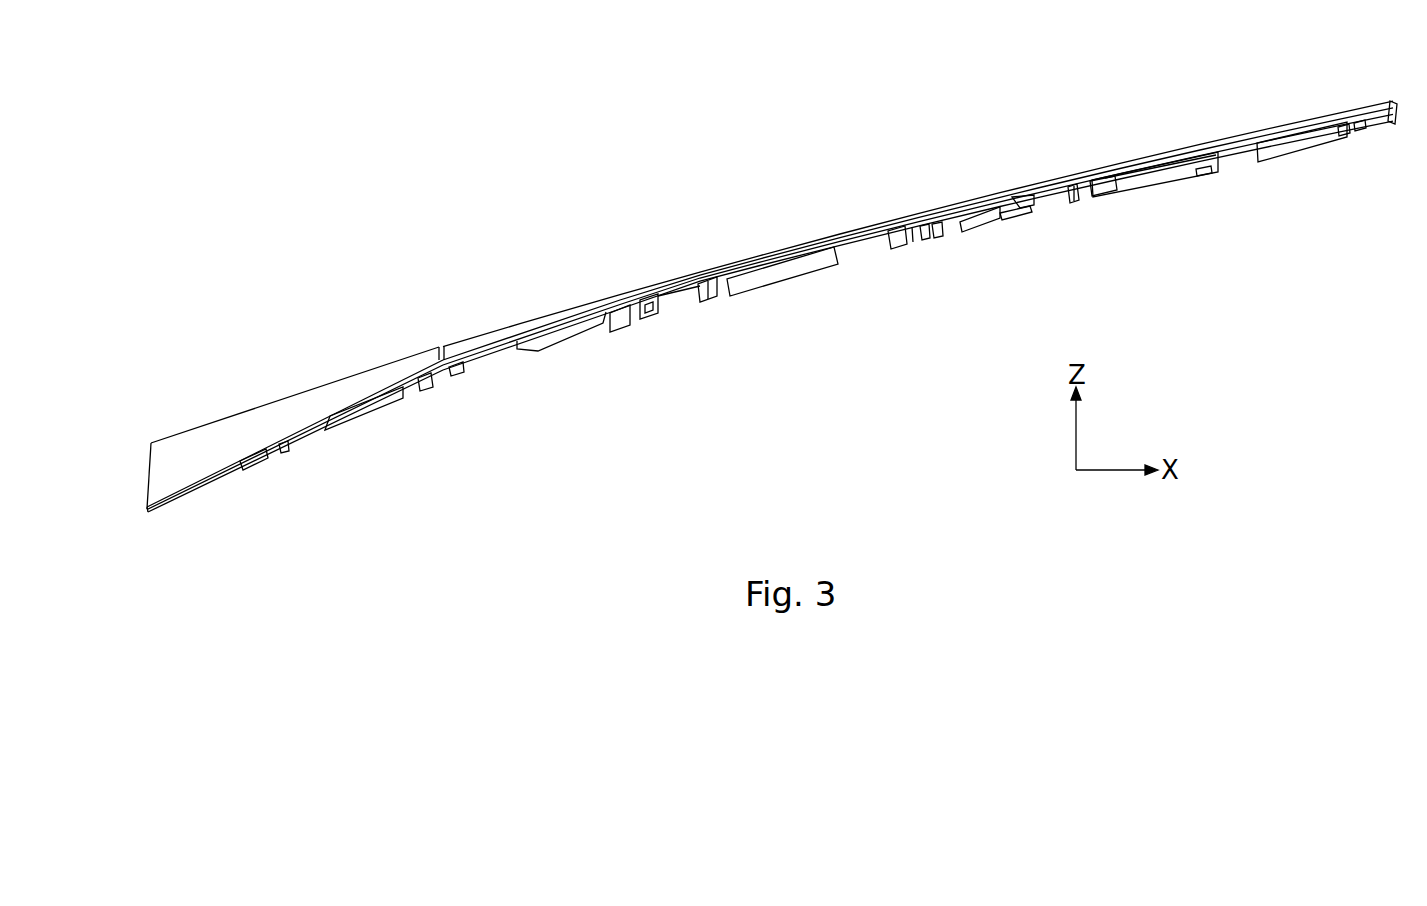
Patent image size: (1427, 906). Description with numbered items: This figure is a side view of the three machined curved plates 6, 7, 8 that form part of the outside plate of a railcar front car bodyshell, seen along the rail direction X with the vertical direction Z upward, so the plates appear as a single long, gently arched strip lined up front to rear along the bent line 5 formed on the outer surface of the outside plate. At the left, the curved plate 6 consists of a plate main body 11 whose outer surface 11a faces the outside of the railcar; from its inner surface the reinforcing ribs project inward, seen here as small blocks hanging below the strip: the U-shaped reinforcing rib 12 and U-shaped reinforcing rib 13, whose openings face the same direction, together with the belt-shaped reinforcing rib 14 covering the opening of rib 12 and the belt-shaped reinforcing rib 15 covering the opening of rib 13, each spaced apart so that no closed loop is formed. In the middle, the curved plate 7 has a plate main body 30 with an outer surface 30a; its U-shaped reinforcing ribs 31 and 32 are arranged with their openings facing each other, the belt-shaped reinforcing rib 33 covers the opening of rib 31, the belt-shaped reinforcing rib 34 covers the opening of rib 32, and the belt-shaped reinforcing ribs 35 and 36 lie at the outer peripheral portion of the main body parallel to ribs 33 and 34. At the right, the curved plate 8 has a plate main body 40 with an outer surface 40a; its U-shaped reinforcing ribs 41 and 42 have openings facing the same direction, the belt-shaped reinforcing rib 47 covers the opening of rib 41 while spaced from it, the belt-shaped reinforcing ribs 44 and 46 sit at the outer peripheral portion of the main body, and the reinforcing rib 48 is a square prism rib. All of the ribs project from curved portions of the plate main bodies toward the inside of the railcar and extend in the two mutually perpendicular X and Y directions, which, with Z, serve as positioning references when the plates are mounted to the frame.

The bent line 5 is at (497, 340).
The curved plate 6 is at (306, 408).
The curved plate 7 is at (753, 297).
The curved plate 8 is at (1218, 158).
The plate main body 11 is at (292, 421).
The outer surface 11a is at (203, 437).
The reinforcing rib 12 is at (240, 470).
The reinforcing rib 13 is at (370, 414).
The reinforcing rib 14 is at (286, 455).
The reinforcing rib 15 is at (433, 392).
The plate main body 30 is at (741, 254).
The outer surface 30a is at (562, 311).
The reinforcing rib 31 is at (578, 343).
The reinforcing rib 32 is at (794, 280).
The reinforcing rib 33 is at (654, 322).
The reinforcing rib 34 is at (710, 304).
The reinforcing rib 35 is at (900, 252).
The reinforcing rib 36 is at (462, 377).
The plate main body 40 is at (1218, 120).
The outer surface 40a is at (1230, 142).
The reinforcing rib 41 is at (1160, 182).
The reinforcing rib 42 is at (1300, 150).
The reinforcing rib 44 is at (936, 243).
The reinforcing rib 46 is at (978, 230).
The reinforcing rib 47 is at (1078, 205).
The reinforcing rib 48 is at (1027, 210).